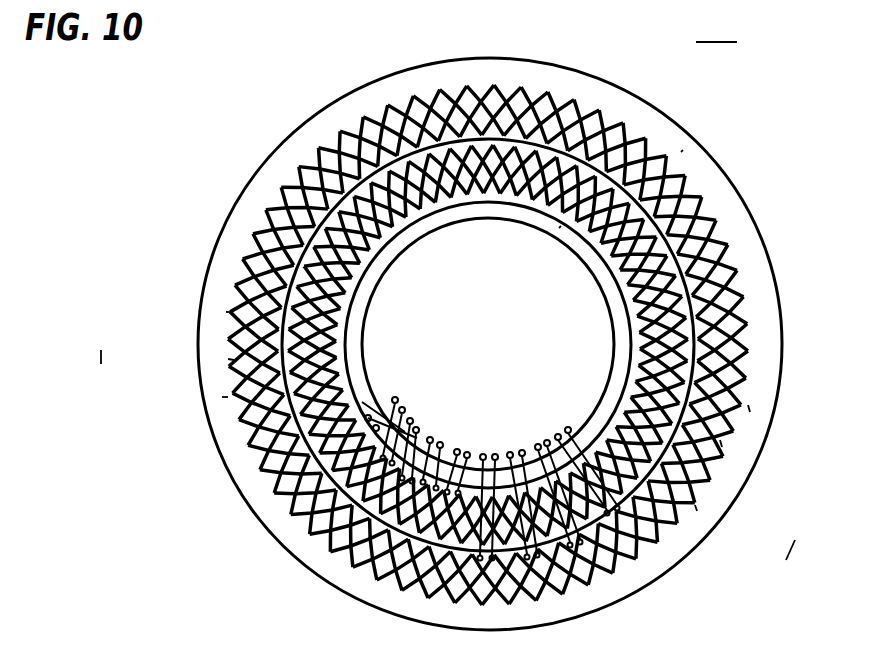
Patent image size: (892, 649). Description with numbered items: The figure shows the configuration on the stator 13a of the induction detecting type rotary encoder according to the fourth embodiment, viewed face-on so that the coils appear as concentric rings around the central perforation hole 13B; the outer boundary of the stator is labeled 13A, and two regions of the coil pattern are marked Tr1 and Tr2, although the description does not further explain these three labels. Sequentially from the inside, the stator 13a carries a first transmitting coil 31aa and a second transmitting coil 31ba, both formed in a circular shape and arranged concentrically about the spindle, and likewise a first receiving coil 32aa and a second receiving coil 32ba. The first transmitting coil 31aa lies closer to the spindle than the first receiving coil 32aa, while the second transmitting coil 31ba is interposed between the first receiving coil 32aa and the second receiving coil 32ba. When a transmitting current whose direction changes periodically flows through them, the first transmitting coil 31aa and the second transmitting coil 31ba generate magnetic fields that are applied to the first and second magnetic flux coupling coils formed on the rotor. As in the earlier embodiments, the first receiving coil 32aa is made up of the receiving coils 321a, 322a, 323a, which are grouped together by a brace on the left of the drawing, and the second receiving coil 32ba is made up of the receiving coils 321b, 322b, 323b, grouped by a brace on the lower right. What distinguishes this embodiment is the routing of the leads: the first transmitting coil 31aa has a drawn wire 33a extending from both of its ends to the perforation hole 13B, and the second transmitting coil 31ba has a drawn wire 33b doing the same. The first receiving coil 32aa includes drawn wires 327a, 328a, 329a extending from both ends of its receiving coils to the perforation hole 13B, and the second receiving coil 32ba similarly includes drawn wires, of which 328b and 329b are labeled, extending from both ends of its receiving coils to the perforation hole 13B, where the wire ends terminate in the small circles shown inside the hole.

The stator 13a is at (699, 75).
The outer yoke 13A is at (293, 136).
The perforation hole 13B is at (460, 220).
The first transmitting coil 31aa is at (525, 200).
The second transmitting coil 31ba is at (578, 152).
The inner trace region Tr1 is at (559, 228).
The outer trace region Tr2 is at (684, 150).
The first receiving coil 32aa is at (113, 299).
The receiving coil 323a is at (226, 312).
The receiving coil 322a is at (228, 359).
The receiving coil 321a is at (222, 397).
The second receiving coil 32ba is at (820, 497).
The receiving coil 323b is at (750, 412).
The receiving coil 322b is at (722, 447).
The receiving coil 321b is at (697, 511).
The drawn wire 33a is at (396, 397).
The drawn wire 33b is at (569, 427).
The drawn wire 327a is at (494, 454).
The drawn wire 328a is at (438, 442).
The drawn wire 328b is at (521, 450).
The drawn wire 329a is at (416, 427).
The drawn wire 329b is at (548, 440).